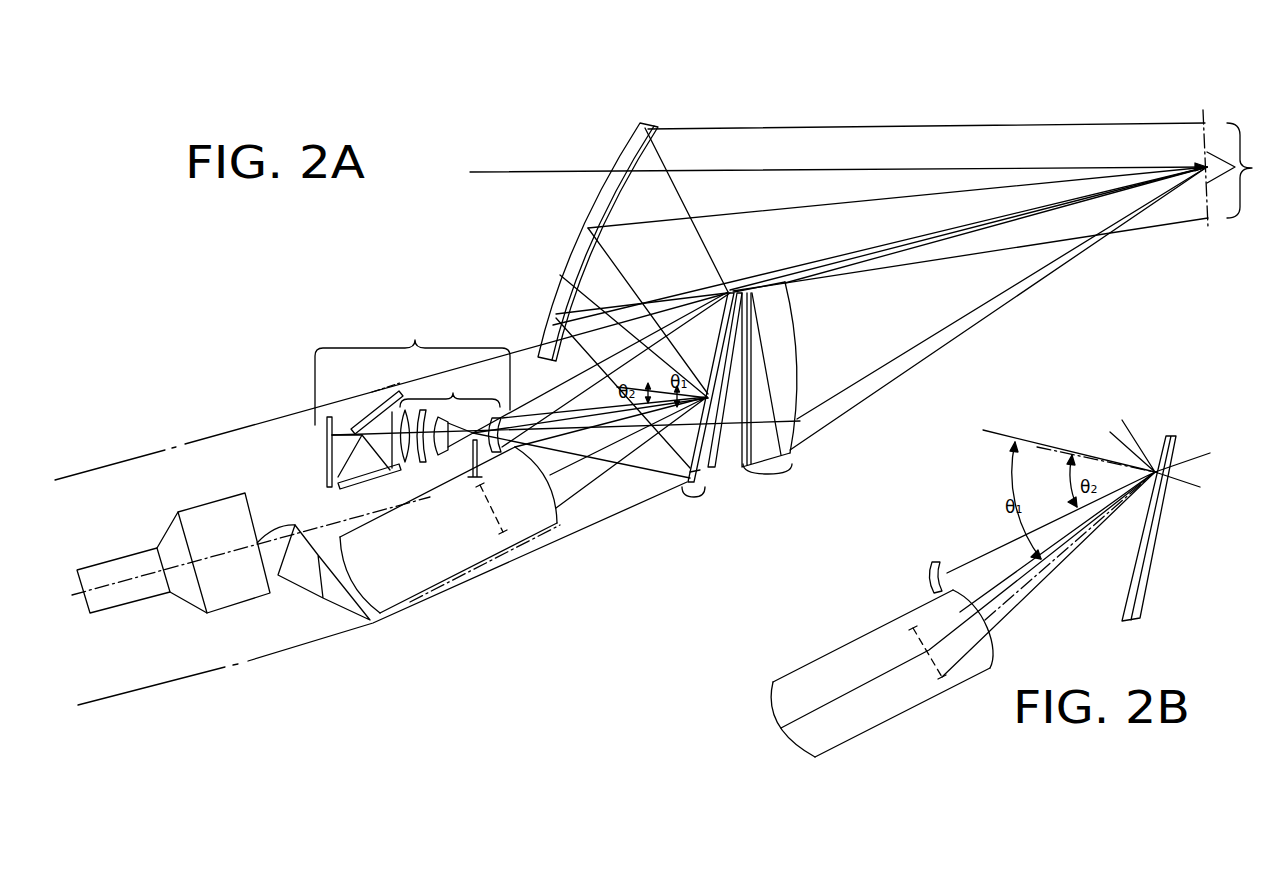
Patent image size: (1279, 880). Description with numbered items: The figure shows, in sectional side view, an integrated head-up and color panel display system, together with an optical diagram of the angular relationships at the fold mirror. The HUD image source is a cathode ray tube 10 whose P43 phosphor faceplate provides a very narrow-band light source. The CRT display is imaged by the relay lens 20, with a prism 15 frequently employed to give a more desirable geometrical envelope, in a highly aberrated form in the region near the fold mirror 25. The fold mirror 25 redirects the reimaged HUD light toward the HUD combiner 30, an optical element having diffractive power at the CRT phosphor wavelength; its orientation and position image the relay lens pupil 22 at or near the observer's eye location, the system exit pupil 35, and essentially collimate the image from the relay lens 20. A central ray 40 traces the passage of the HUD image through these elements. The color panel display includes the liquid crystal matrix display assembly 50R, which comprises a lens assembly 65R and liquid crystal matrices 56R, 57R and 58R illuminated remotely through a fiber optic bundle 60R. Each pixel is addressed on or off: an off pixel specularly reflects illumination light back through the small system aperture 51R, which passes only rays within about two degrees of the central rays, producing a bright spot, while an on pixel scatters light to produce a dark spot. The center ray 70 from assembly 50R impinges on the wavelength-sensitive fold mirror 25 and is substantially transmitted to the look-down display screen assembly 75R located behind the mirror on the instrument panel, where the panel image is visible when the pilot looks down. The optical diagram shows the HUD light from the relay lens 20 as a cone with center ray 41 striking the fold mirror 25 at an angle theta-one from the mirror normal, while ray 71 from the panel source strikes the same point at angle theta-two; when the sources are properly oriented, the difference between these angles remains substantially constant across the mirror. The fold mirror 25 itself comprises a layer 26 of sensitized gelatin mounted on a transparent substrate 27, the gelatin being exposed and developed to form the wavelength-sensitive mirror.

In FIG. 2A, the cathode ray tube (CRT) 10 is at (227, 607).
In FIG. 2A, the prism 15 is at (305, 578).
In FIG. 2A, the relay lens 20 is at (403, 603).
In FIG. 2B, the relay lens 20 is at (837, 647).
In FIG. 2A, the relay lens pupil 22 is at (511, 521).
In FIG. 2B, the relay lens pupil 22 is at (933, 665).
In FIG. 2A, the fold mirror 25 is at (694, 497).
In FIG. 2B, the fold mirror 25 is at (1168, 434).
In FIG. 2A, the layer of sensitized gelatin 26 is at (688, 468).
In FIG. 2A, the transparent substrate 27 is at (707, 470).
In FIG. 2A, the HUD combiner 30 is at (584, 209).
In FIG. 2A, the system exit pupil 35 is at (1240, 220).
In FIG. 2A, the central ray 40 is at (550, 477).
In FIG. 2B, the central ray 40 is at (843, 697).
In FIG. 2B, the center ray 41 is at (1007, 588).
In FIG. 2A, the liquid crystal matrix display assembly 50R is at (412, 371).
In FIG. 2A, the system aperture 51R is at (482, 427).
In FIG. 2A, the liquid crystal matrix 56R is at (365, 418).
In FIG. 2A, the liquid crystal matrix 57R is at (327, 470).
In FIG. 2A, the liquid crystal matrix 58R is at (348, 490).
In FIG. 2A, the fiber optic bundle 60R is at (481, 459).
In FIG. 2A, the lens assembly 65R is at (450, 419).
In FIG. 2A, the center ray 70 is at (587, 453).
In FIG. 2B, the ray 71 is at (987, 555).
In FIG. 2A, the look-down display (LDD) screen assembly 75R is at (768, 474).